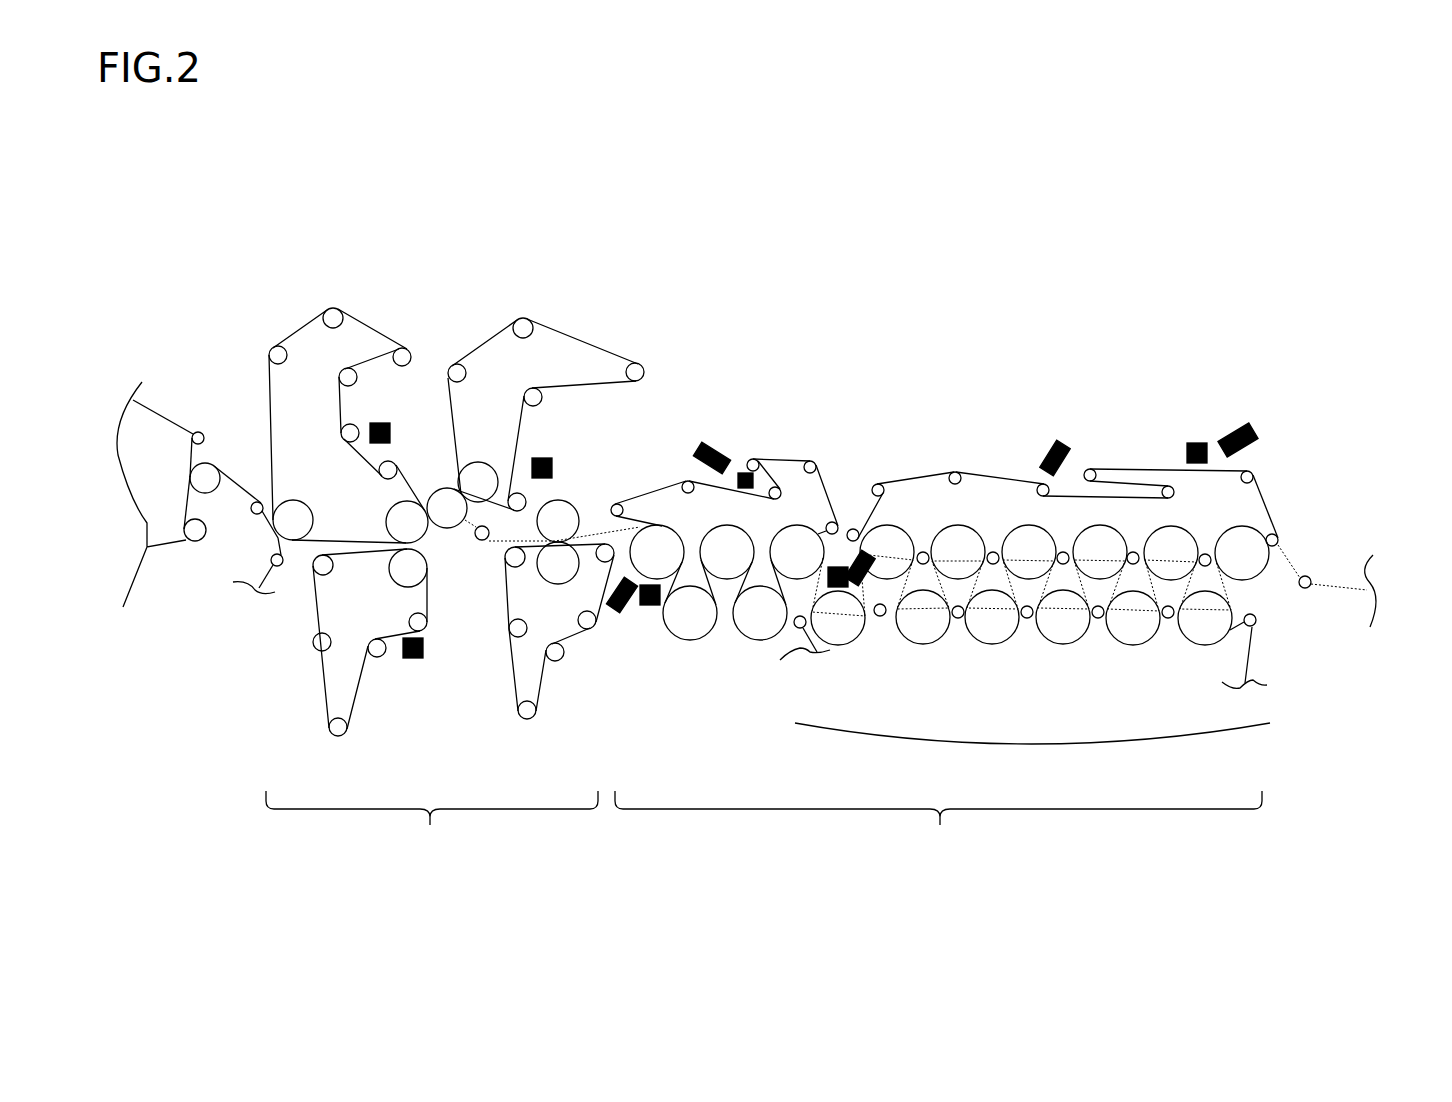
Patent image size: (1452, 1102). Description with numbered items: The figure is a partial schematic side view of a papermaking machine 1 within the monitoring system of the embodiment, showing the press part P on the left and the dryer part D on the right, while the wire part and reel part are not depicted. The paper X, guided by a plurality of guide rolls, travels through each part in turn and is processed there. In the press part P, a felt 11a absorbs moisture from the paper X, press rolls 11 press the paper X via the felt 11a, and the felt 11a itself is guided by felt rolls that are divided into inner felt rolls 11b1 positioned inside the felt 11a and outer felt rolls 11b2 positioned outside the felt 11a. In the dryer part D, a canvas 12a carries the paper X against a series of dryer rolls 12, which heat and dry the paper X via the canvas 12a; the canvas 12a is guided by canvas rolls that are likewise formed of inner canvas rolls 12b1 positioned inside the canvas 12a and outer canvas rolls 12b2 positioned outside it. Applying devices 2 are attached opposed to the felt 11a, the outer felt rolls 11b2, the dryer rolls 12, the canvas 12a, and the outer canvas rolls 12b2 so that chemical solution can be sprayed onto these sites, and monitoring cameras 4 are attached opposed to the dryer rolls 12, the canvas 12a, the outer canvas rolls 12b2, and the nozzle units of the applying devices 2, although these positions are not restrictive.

The papermaking machine 1 is at (908, 336).
The applying device 2 is at (390, 436).
The monitoring camera 4 is at (612, 612).
The press roll 11 is at (447, 488).
The felt 11a is at (325, 312).
The inner felt roll 11b1 is at (268, 352).
The outer felt roll 11b2 is at (373, 410).
The dryer roll 12 is at (960, 525).
The canvas 12a is at (913, 473).
The inner canvas roll 12b1 is at (812, 461).
The outer canvas roll 12b2 is at (775, 486).
The paper X is at (493, 545).
The press part P is at (432, 828).
The dryer part D is at (938, 831).